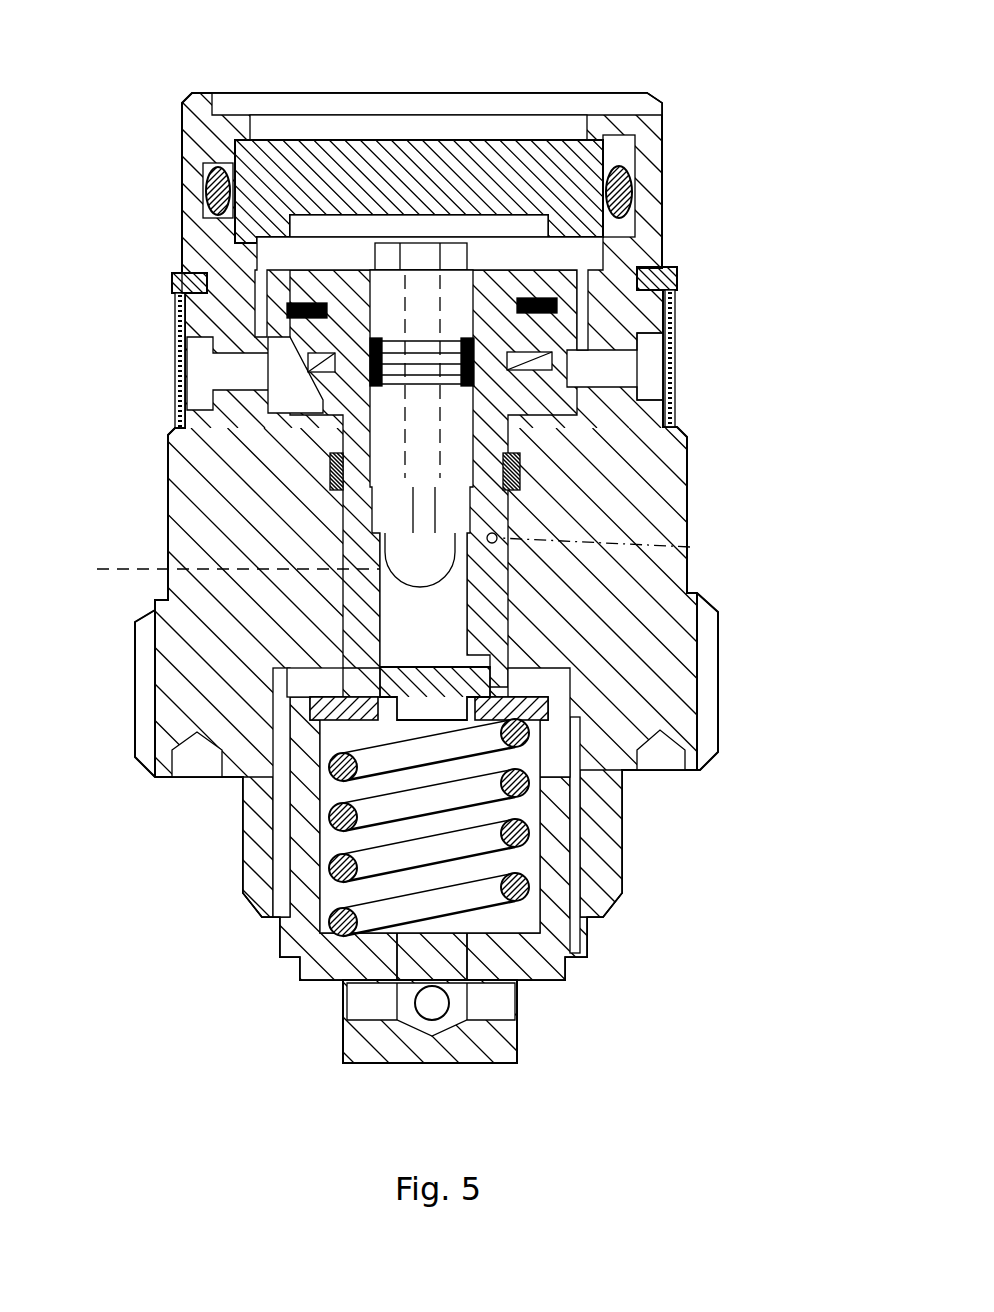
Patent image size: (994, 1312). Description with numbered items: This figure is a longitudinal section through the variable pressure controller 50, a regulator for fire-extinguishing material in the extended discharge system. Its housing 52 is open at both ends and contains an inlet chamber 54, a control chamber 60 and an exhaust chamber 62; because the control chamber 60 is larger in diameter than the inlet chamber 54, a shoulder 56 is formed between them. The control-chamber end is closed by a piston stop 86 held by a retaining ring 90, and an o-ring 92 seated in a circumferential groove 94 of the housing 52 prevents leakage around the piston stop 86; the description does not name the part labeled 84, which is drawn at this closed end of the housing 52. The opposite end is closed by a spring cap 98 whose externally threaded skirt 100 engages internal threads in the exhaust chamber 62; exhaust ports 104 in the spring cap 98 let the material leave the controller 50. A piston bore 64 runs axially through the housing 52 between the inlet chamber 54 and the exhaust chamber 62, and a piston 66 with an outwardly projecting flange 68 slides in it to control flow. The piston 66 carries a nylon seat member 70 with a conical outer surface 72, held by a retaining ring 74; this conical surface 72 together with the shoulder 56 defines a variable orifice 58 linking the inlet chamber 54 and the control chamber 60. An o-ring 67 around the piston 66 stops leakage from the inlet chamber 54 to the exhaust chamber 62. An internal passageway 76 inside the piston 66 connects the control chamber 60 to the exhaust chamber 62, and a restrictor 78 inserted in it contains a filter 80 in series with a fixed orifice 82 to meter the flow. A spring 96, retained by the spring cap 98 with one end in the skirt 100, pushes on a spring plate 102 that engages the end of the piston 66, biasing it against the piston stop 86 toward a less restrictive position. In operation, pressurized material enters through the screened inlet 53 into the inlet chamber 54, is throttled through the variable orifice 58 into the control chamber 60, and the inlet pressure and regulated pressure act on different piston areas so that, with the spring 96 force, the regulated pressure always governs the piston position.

The variable pressure controller 50 is at (712, 190).
The housing 52 is at (205, 228).
The inlet 53 is at (673, 398).
The inlet chamber 54 is at (300, 462).
The shoulder 56 is at (207, 372).
The variable orifice 58 is at (633, 362).
The control chamber 60 is at (188, 275).
The exhaust chamber 62 is at (520, 863).
The piston bore 64 is at (690, 547).
The piston 66 is at (150, 612).
The o-ring 67 is at (330, 487).
The outwardly projecting flange 68 is at (243, 323).
The seat member 70 is at (167, 433).
The conical outer surface 72 is at (677, 338).
The retaining ring 74 is at (655, 392).
The internal passageway 76 is at (445, 607).
The restrictor 78 is at (447, 440).
The filter 80 is at (400, 269).
The fixed orifice 82 is at (216, 568).
The cover assembly 84 is at (433, 78).
The piston stop 86 is at (480, 160).
The retaining ring 90 is at (612, 95).
The o-ring 92 is at (200, 163).
The circumferential groove 94 is at (630, 163).
The spring 96 is at (520, 835).
The spring cap 98 is at (588, 958).
The externally threaded skirt 100 is at (300, 890).
The spring plate 102 is at (330, 727).
The exhaust ports 104 is at (370, 1007).